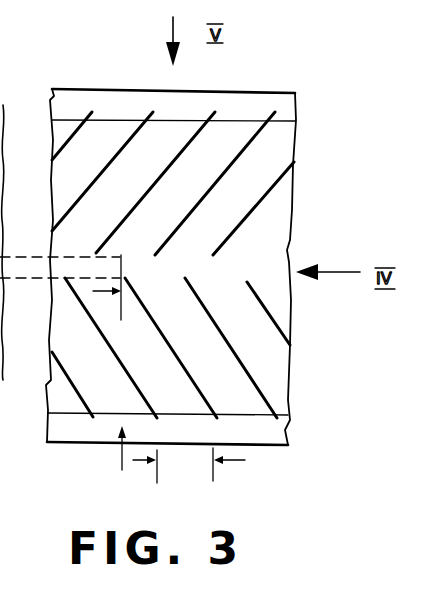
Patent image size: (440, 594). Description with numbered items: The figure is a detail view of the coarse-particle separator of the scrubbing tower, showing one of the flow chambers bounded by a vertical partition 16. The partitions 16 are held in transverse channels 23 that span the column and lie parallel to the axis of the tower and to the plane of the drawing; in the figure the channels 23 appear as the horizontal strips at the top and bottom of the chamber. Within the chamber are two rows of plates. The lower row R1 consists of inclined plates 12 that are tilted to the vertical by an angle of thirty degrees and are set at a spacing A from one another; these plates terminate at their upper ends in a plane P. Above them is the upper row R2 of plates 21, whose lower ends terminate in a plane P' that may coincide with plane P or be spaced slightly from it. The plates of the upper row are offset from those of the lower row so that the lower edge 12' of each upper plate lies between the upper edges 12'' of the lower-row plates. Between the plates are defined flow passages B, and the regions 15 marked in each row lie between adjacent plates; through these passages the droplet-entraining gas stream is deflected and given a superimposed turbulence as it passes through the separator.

The inclined plates 12 is at (163, 143).
The lower edge of upper plate 12' is at (253, 225).
The upper edges of lower row plates 12'' is at (235, 329).
The ridges 15 is at (173, 212).
The partitions 16 is at (58, 389).
The plates of the upper row 21 is at (120, 452).
The transverse channels 23 is at (250, 100).
The spacing A is at (189, 465).
The flow passages B is at (112, 400).
The plane P is at (60, 296).
The plane P' is at (60, 236).
The lower row R1 is at (285, 399).
The upper row R2 is at (302, 198).